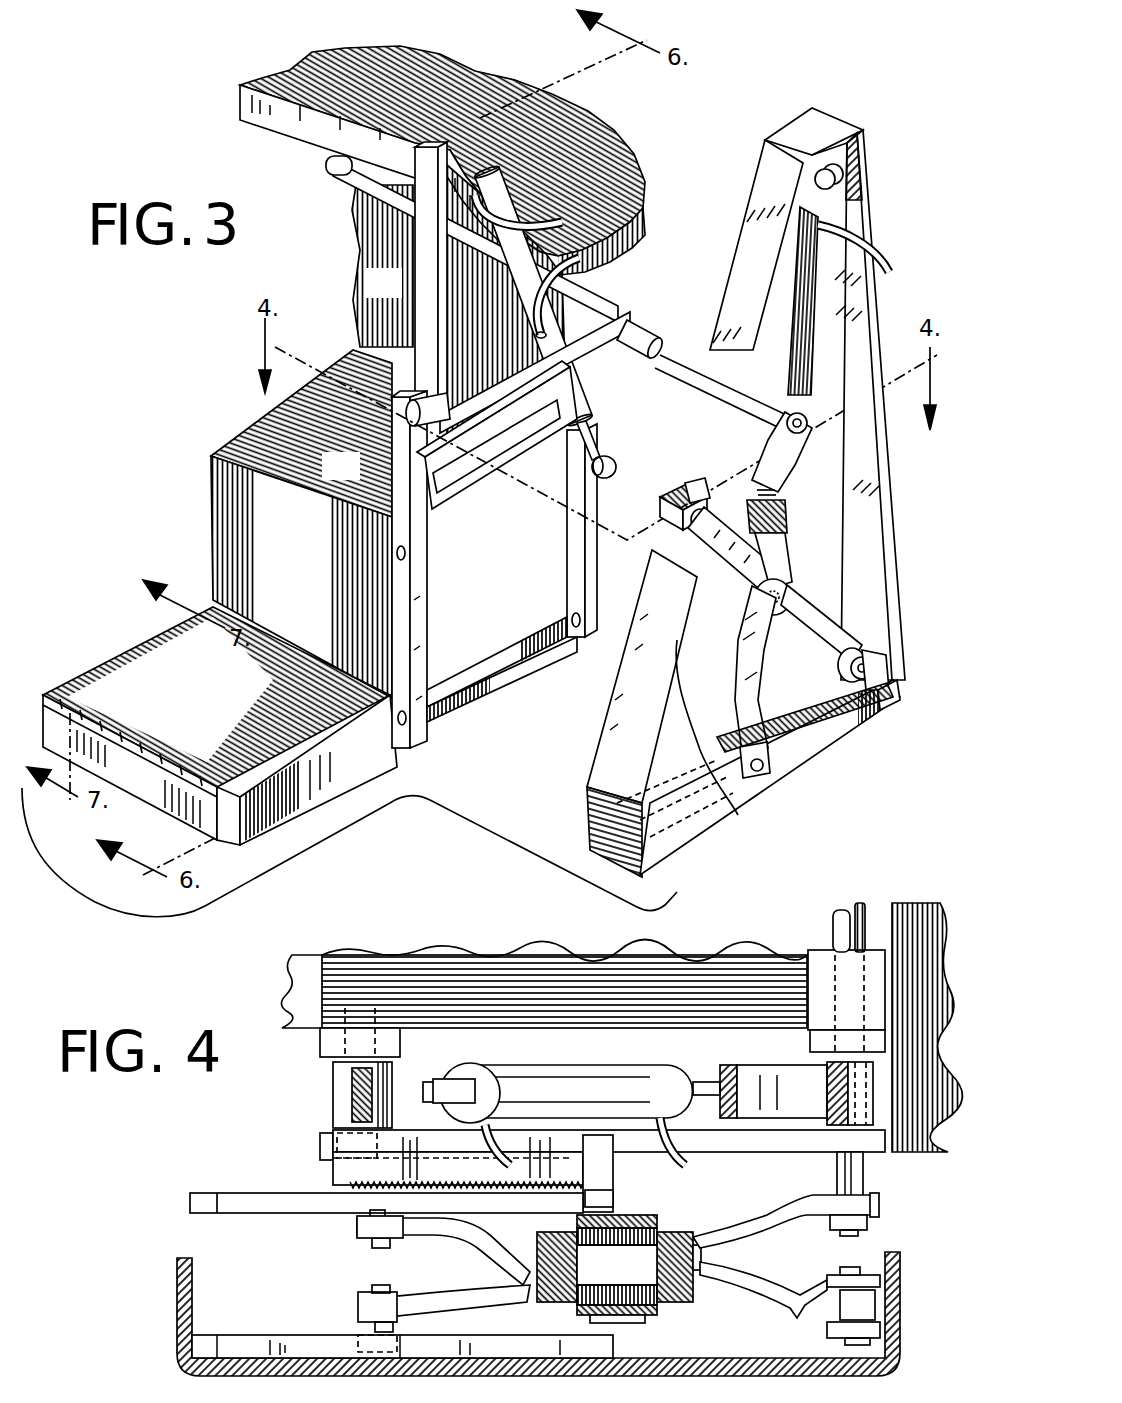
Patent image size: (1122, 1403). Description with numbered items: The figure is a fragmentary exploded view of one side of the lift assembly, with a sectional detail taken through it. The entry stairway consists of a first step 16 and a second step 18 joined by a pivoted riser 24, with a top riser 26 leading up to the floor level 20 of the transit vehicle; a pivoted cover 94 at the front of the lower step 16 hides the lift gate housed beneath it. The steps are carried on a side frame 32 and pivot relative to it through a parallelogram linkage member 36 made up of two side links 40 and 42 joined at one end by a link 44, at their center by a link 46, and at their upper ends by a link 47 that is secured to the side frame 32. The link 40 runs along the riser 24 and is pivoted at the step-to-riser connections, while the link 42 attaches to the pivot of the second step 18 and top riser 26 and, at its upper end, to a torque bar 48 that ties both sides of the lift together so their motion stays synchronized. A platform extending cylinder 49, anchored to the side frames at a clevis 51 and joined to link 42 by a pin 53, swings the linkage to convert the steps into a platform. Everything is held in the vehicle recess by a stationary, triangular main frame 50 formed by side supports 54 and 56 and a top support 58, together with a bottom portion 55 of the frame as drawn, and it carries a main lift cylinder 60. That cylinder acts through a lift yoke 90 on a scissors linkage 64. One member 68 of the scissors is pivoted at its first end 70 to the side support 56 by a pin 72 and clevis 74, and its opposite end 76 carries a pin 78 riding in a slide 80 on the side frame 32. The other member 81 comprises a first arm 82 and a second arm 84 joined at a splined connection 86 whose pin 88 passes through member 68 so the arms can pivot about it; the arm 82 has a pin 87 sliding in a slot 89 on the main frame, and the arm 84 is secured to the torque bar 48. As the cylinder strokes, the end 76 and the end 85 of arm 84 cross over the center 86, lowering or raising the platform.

In FIG. 3, the first step 16 is at (208, 725).
In FIG. 3, the second step 18 is at (327, 479).
In FIG. 4, the second step 18 is at (499, 963).
In FIG. 3, the floor level 20 is at (393, 157).
In FIG. 4, the floor level 20 is at (923, 923).
In FIG. 3, the riser 24 is at (287, 591).
In FIG. 4, the riser 24 is at (286, 997).
In FIG. 3, the top riser 26 is at (370, 296).
In FIG. 4, the top riser 26 is at (807, 987).
In FIG. 3, the side frame 32 is at (525, 158).
In FIG. 3, the linkage member 36 is at (474, 692).
In FIG. 3, the side link 40 is at (418, 607).
In FIG. 3, the side link 42 is at (563, 573).
In FIG. 3, the link 44 is at (505, 662).
In FIG. 3, the link 46 is at (510, 493).
In FIG. 3, the link 47 is at (608, 345).
In FIG. 3, the torque bar 48 is at (342, 173).
In FIG. 4, the torque bar 48 is at (845, 926).
In FIG. 3, the platform extending cylinder 49 is at (500, 258).
In FIG. 4, the platform extending cylinder 49 is at (604, 1085).
In FIG. 3, the main frame 50 is at (825, 357).
In FIG. 3, the clevis 51 is at (455, 147).
In FIG. 3, the pin 53 is at (618, 470).
In FIG. 3, the side support 54 is at (648, 655).
In FIG. 3, the housing base 55 is at (708, 830).
In FIG. 4, the housing base 55 is at (287, 1368).
In FIG. 3, the side support 56 is at (893, 507).
In FIG. 3, the top support 58 is at (793, 128).
In FIG. 3, the main lift cylinder 60 is at (817, 310).
In FIG. 3, the scissors linkage 64 is at (804, 562).
In FIG. 3, the first member 68 is at (812, 640).
In FIG. 4, the first member 68 is at (760, 1283).
In FIG. 3, the first end 70 is at (855, 650).
In FIG. 4, the first end 70 is at (878, 1305).
In FIG. 3, the pin 72 is at (870, 670).
In FIG. 4, the pin 72 is at (843, 1268).
In FIG. 3, the clevis 74 is at (898, 703).
In FIG. 4, the clevis 74 is at (828, 1328).
In FIG. 3, the opposite end 76 is at (660, 532).
In FIG. 4, the opposite end 76 is at (460, 1238).
In FIG. 3, the pin 78 is at (687, 488).
In FIG. 4, the pin 78 is at (372, 1243).
In FIG. 3, the slide 80 is at (455, 478).
In FIG. 4, the slide 80 is at (303, 1204).
In FIG. 3, the other member 81 is at (837, 728).
In FIG. 3, the first arm 82 is at (752, 648).
In FIG. 4, the first arm 82 is at (490, 1298).
In FIG. 3, the second arm 84 is at (792, 462).
In FIG. 4, the second arm 84 is at (768, 1215).
In FIG. 3, the end 85 is at (812, 427).
In FIG. 4, the end 85 is at (880, 1205).
In FIG. 3, the splined connection 86 is at (795, 603).
In FIG. 4, the splined connection 86 is at (620, 1317).
In FIG. 3, the pin 87 is at (795, 783).
In FIG. 4, the pin 87 is at (357, 1286).
In FIG. 4, the pin 88 is at (604, 1278).
In FIG. 3, the slot 89 is at (748, 813).
In FIG. 4, the slot 89 is at (247, 1347).
In FIG. 4, the lift yoke 90 is at (702, 1250).
In FIG. 3, the pivoted cover 94 is at (180, 810).